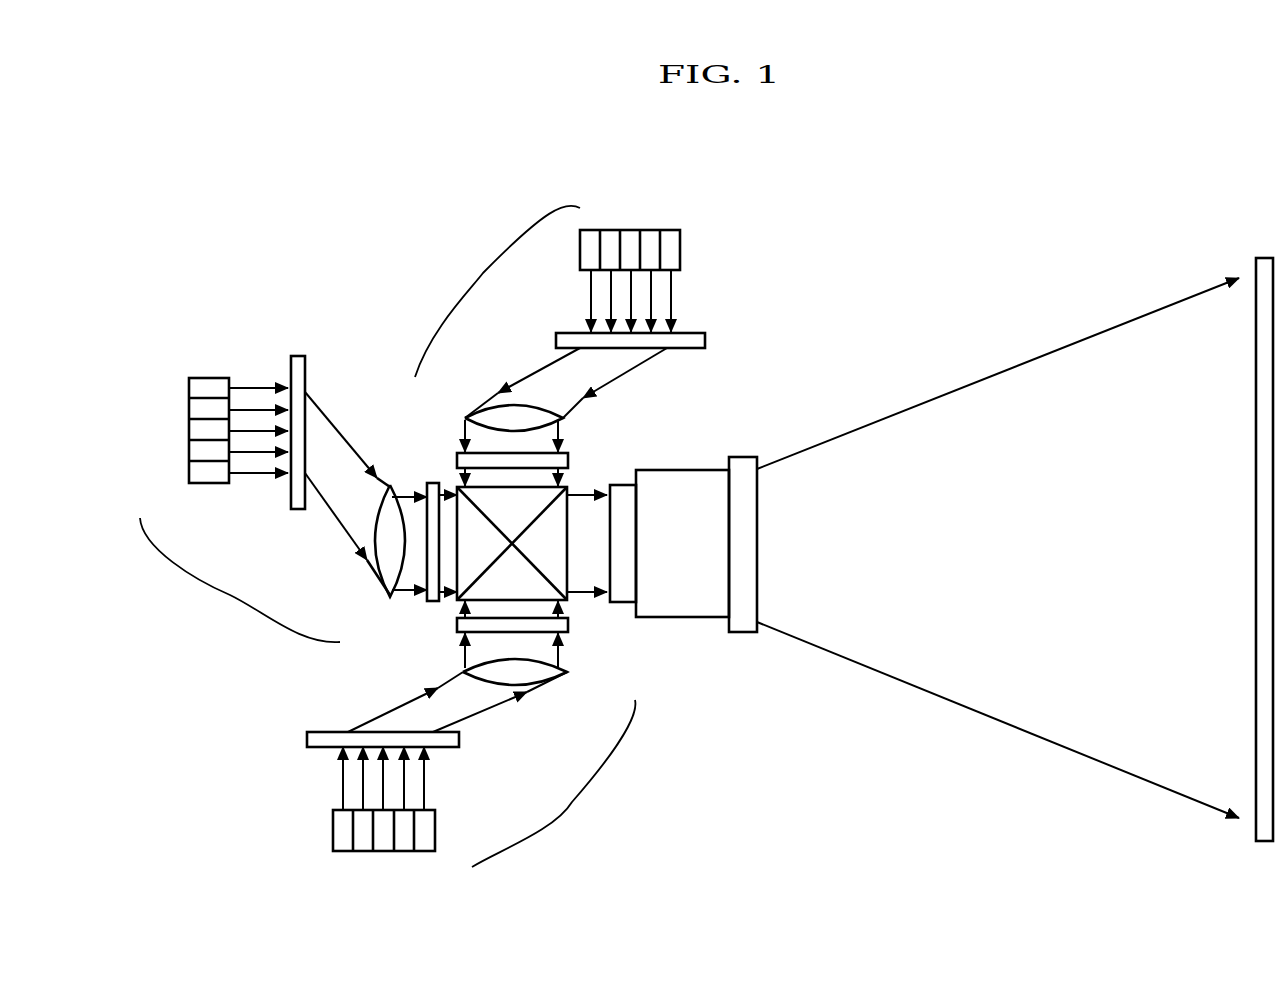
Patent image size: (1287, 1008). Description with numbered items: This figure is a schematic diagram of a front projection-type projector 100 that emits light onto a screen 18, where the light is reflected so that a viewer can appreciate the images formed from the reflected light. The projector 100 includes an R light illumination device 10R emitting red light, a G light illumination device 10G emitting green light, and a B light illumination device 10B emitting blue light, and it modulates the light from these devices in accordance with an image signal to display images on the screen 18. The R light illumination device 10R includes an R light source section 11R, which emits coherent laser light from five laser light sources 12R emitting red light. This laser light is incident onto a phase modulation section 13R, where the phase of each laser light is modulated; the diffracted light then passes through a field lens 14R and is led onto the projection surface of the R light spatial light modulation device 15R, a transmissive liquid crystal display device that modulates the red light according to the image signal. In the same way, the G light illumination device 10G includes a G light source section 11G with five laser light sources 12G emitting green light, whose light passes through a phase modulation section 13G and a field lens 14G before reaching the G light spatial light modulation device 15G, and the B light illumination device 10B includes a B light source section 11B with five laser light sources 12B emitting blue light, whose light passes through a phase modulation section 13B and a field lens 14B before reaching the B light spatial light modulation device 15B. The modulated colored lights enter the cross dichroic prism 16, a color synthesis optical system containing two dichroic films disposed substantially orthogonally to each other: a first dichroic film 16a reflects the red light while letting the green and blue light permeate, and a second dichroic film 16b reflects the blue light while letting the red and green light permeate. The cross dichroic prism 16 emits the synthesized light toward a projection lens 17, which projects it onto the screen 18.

The projector 100 is at (328, 245).
The R light illumination device 10R is at (497, 291).
The G light illumination device 10G is at (240, 580).
The B light illumination device 10B is at (553, 783).
The R light source section 11R is at (683, 246).
The G light source section 11G is at (208, 370).
The B light source section 11B is at (323, 826).
The laser light sources 12R is at (590, 237).
The laser light sources 12G is at (200, 389).
The laser light sources 12B is at (338, 840).
The phase modulation section 13R is at (705, 342).
The phase modulation section 13G is at (297, 357).
The phase modulation section 13B is at (307, 740).
The field lens 14R is at (465, 415).
The field lens 14G is at (390, 595).
The field lens 14B is at (560, 682).
The R light spatial light modulation device 15R is at (565, 456).
The G light spatial light modulation device 15G is at (433, 483).
The B light spatial light modulation device 15B is at (457, 625).
The cross dichroic prism 16 is at (553, 550).
The first dichroic film 16a is at (550, 577).
The second dichroic film 16b is at (537, 517).
The projection lens 17 is at (692, 480).
The screen 18 is at (1256, 260).